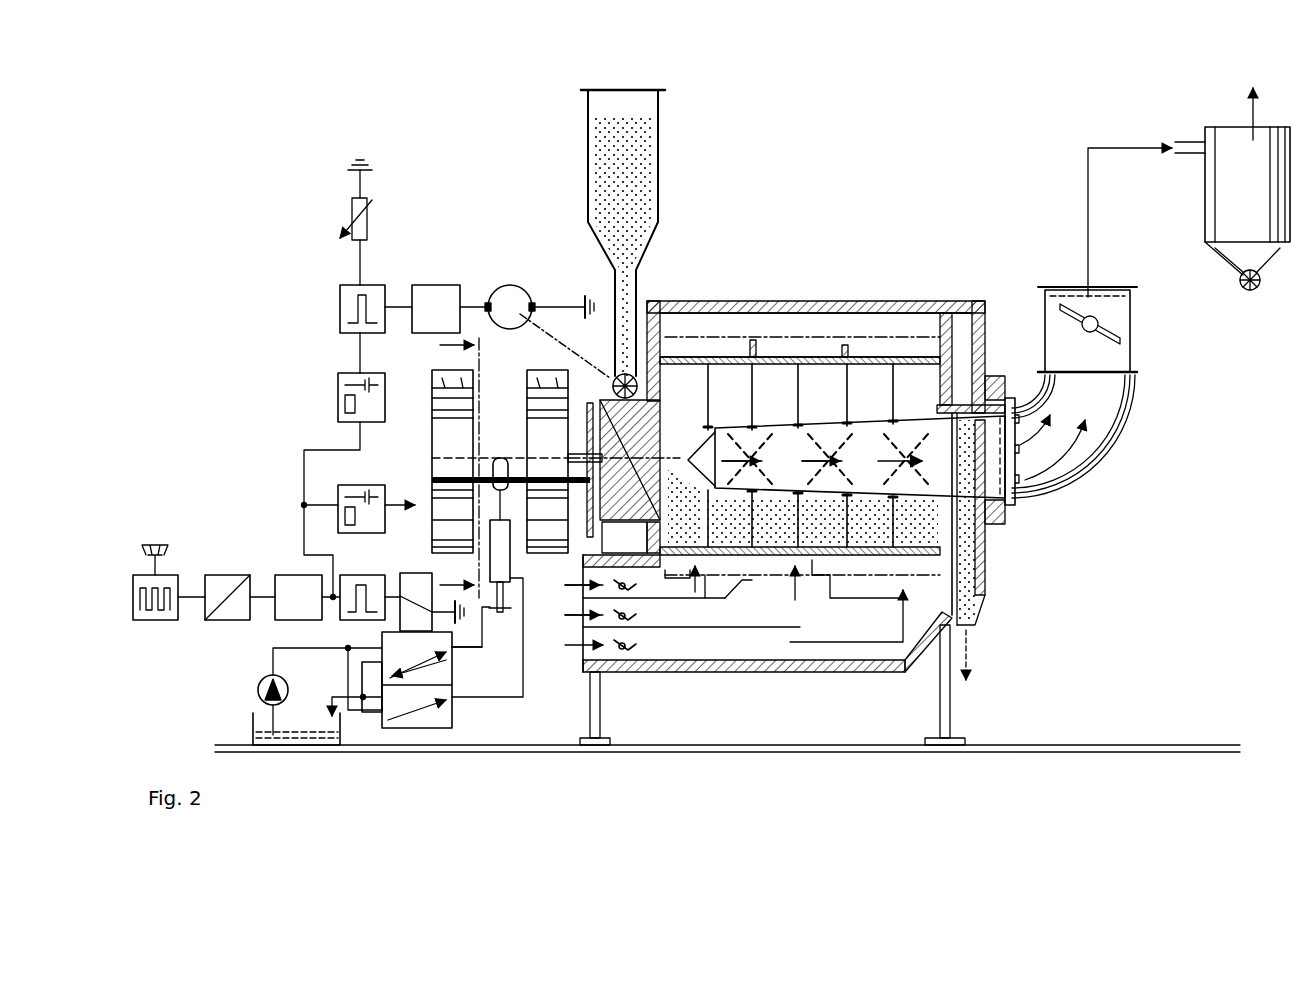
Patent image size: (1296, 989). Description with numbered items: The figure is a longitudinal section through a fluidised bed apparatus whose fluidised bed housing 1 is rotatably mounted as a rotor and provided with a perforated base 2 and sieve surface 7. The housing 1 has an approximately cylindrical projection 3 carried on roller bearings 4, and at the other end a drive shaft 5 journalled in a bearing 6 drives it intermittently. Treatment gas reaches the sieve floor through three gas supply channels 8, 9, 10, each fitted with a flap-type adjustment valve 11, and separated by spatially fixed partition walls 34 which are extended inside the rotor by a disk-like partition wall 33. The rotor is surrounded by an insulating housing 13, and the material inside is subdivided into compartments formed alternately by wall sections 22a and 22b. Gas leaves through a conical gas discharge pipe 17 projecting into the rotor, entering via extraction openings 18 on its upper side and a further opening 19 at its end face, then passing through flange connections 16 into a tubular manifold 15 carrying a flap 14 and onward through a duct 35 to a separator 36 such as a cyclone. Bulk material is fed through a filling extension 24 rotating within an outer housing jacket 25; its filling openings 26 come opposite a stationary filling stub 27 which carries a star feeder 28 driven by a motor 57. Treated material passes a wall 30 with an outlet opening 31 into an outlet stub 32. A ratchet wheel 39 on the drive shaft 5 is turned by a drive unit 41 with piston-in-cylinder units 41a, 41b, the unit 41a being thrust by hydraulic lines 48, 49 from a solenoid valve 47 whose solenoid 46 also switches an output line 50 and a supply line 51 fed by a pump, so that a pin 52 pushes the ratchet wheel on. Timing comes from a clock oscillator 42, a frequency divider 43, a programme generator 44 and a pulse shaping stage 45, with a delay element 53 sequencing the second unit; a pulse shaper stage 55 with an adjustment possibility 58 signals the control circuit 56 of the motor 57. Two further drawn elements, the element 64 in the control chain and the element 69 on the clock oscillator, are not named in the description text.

The fluidised bed housing 1 is at (900, 350).
The perforated base 2 is at (935, 556).
The cylindrical projection 3 is at (960, 400).
The roller bearings 4 is at (1000, 390).
The drive shaft 5 is at (616, 462).
The bearing 6 is at (590, 478).
The sieve surface 7 is at (800, 356).
The gas supply channel 8 is at (685, 653).
The gas supply channel 9 is at (685, 625).
The gas supply channel 10 is at (690, 593).
The adjustment valve 11 is at (637, 590).
The insulating housing 13 is at (840, 312).
The flap 14 is at (1120, 340).
The tubular manifold 15 is at (1115, 440).
The flange connections 16 is at (1018, 475).
The gas discharge pipe 17 is at (884, 555).
The extraction openings 18 is at (738, 440).
The further opening 19 is at (712, 458).
The wall section 22a is at (778, 545).
The wall section 22b is at (782, 360).
The filling extension 24 is at (631, 537).
The outer housing jacket 25 is at (600, 540).
The filling openings 26 is at (612, 392).
The filling stub 27 is at (618, 378).
The star feeder 28 is at (630, 372).
The wall 30 is at (965, 322).
The outlet opening 31 is at (925, 520).
The outlet stub 32 is at (978, 605).
The partition wall 33 is at (855, 585).
The partition walls 34 is at (757, 345).
The duct 35 is at (1118, 140).
The separator 36 is at (1205, 210).
The ratchet wheel 39 is at (528, 392).
The drive unit 41 is at (512, 560).
The piston-in-cylinder unit 41a is at (503, 460).
The piston-in-cylinder unit 41b is at (494, 504).
The clock oscillator 42 is at (162, 622).
The frequency divider 43 is at (236, 576).
The programme generator 44 is at (311, 607).
The pulse shaping stage 45 is at (370, 576).
The solenoid 46 is at (416, 576).
The solenoid valve 47 is at (452, 672).
The line 48 is at (482, 640).
The line 49 is at (523, 690).
The output line 50 is at (362, 676).
The supply line 51 is at (368, 712).
The pin 52 is at (460, 440).
The delay element 53 is at (362, 485).
The pulse shaper stage 55 is at (338, 302).
The control circuit 56 is at (449, 318).
The motor 57 is at (502, 290).
The adjustment possibility 58 is at (372, 212).
The flip-flop element 64 is at (338, 394).
The sensor 69 is at (156, 545).